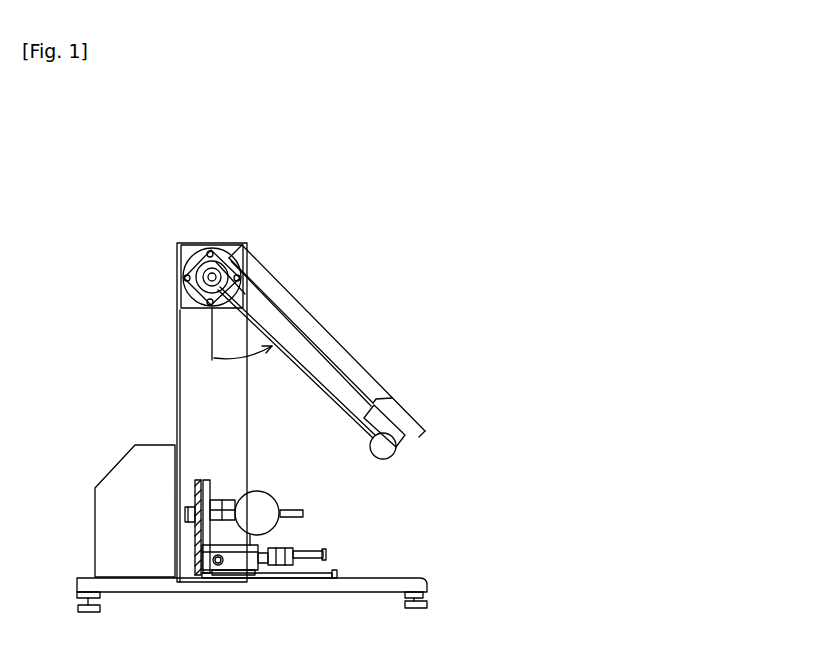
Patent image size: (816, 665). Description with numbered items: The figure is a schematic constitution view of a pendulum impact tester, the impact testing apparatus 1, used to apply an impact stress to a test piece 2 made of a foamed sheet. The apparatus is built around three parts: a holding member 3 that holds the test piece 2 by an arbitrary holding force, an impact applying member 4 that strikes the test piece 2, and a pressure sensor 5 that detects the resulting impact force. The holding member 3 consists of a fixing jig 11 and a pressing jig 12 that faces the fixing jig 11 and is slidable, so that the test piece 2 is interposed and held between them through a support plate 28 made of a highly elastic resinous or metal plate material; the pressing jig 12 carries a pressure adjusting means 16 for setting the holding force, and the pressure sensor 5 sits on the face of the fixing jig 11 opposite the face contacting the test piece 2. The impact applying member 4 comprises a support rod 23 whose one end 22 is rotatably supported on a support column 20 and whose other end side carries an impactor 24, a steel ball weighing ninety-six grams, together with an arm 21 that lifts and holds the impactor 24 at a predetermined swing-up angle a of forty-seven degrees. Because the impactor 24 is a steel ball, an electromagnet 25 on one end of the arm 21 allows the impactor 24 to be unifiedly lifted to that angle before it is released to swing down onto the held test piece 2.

The impact testing apparatus 1 is at (244, 186).
The test piece 2 is at (198, 533).
The holding member 3 is at (198, 456).
The impact applying member 4 is at (345, 323).
The pressure sensor 5 is at (186, 512).
The fixing jig 11 is at (198, 594).
The pressing jig 12 is at (208, 481).
The pressure adjusting means 16 is at (260, 500).
The support column 20 is at (184, 370).
The arm 21 is at (358, 375).
The one end 22 is at (182, 293).
The support rod 23 is at (316, 378).
The impactor 24 is at (383, 448).
The electromagnet 25 is at (410, 434).
The support plate 28 is at (200, 505).
The swing-up angle a is at (243, 362).